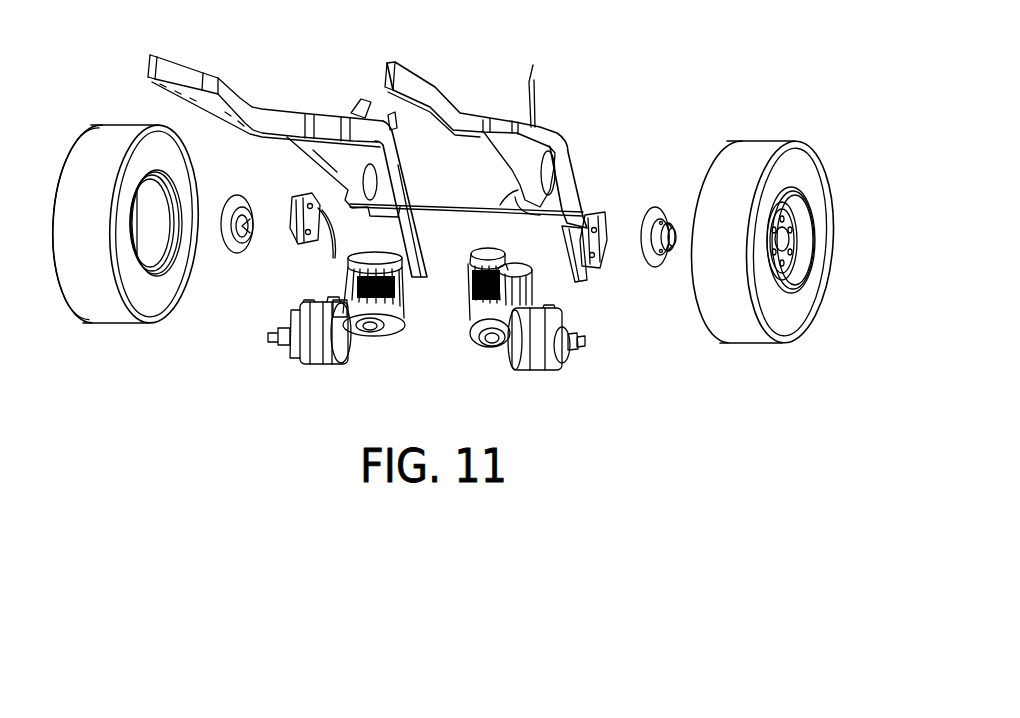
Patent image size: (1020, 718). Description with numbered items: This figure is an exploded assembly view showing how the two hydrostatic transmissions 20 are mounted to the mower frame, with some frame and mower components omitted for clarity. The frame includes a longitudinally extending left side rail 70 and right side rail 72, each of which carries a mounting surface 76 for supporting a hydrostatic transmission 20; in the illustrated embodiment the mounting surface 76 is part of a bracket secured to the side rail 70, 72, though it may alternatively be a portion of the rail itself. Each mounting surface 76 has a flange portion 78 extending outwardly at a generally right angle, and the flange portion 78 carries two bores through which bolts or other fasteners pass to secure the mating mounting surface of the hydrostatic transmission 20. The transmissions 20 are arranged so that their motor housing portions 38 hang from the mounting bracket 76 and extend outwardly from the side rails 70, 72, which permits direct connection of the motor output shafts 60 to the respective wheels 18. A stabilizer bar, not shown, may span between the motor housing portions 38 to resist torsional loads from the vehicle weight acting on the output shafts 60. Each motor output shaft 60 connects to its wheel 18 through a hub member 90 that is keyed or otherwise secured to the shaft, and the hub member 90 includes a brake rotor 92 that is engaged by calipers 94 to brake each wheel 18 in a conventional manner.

The wheel 18 is at (117, 128).
The hydrostatic transmission 20 is at (357, 358).
The motor housing portion 38 is at (315, 360).
The motor output shaft 60 is at (275, 335).
The left side rail 70 is at (413, 73).
The right side rail 72 is at (182, 55).
The mounting surface 76 is at (570, 196).
The flange portion 78 is at (547, 200).
The hub member 90 is at (672, 220).
The brake rotor 92 is at (657, 207).
The caliper 94 is at (606, 236).